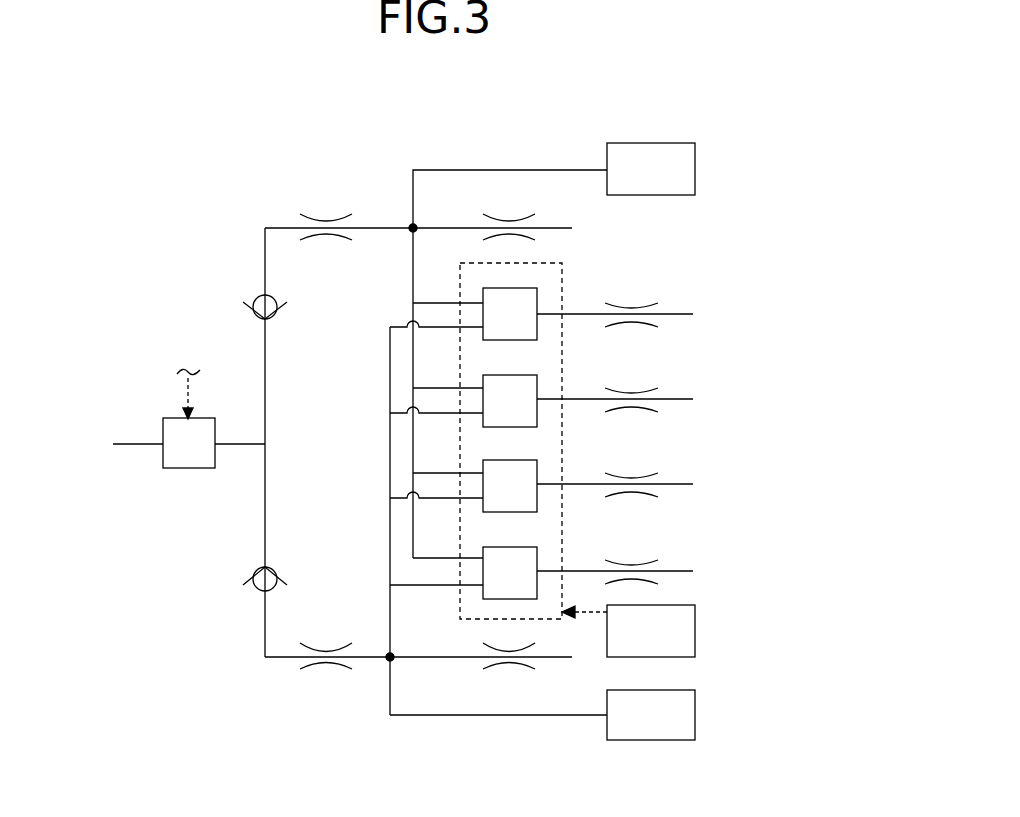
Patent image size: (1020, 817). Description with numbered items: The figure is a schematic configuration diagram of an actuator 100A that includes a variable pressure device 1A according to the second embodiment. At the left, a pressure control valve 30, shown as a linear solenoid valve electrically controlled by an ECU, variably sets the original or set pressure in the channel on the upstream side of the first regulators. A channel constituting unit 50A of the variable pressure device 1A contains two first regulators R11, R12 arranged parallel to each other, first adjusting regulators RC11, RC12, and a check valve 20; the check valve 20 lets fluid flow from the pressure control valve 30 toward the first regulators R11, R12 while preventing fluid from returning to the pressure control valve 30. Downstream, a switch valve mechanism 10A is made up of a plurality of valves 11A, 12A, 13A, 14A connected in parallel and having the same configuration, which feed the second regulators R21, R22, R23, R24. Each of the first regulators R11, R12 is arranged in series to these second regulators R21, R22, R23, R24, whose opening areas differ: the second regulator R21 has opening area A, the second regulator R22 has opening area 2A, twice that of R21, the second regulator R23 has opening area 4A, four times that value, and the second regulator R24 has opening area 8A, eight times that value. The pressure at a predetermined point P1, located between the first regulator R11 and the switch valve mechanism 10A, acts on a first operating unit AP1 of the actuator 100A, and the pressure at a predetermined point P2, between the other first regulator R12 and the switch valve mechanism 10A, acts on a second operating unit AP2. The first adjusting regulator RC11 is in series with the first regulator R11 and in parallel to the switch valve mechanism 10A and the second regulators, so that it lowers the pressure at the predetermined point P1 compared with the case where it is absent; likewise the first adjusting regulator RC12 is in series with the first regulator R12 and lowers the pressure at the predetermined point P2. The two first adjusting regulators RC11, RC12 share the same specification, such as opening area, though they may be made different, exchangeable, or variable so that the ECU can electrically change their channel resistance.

The variable pressure device 1A is at (325, 145).
The actuator 100A is at (703, 124).
The predetermined point P1 is at (412, 225).
The predetermined point P2 is at (388, 661).
The first regulator R11 is at (310, 219).
The first regulator R12 is at (307, 667).
The first adjusting regulator RC11 is at (522, 219).
The first adjusting regulator RC12 is at (524, 668).
The check valve 20 is at (262, 298).
The pressure control valve 30 is at (170, 416).
The switch valve mechanism 10A is at (529, 398).
The channel constituting unit 50A is at (585, 283).
The valve 11A is at (486, 288).
The valve 12A is at (486, 375).
The valve 13A is at (486, 460).
The valve 14A is at (486, 547).
The second regulator R21 is at (653, 303).
The second regulator R22 is at (653, 388).
The second regulator R23 is at (653, 473).
The second regulator R24 is at (653, 560).
The opening area A is at (632, 289).
The opening area 2A is at (631, 380).
The opening area 4A is at (631, 465).
The opening area 8A is at (631, 549).
The first operating unit AP1 is at (651, 169).
The second operating unit AP2 is at (651, 715).
The element ECU is at (628, 631).